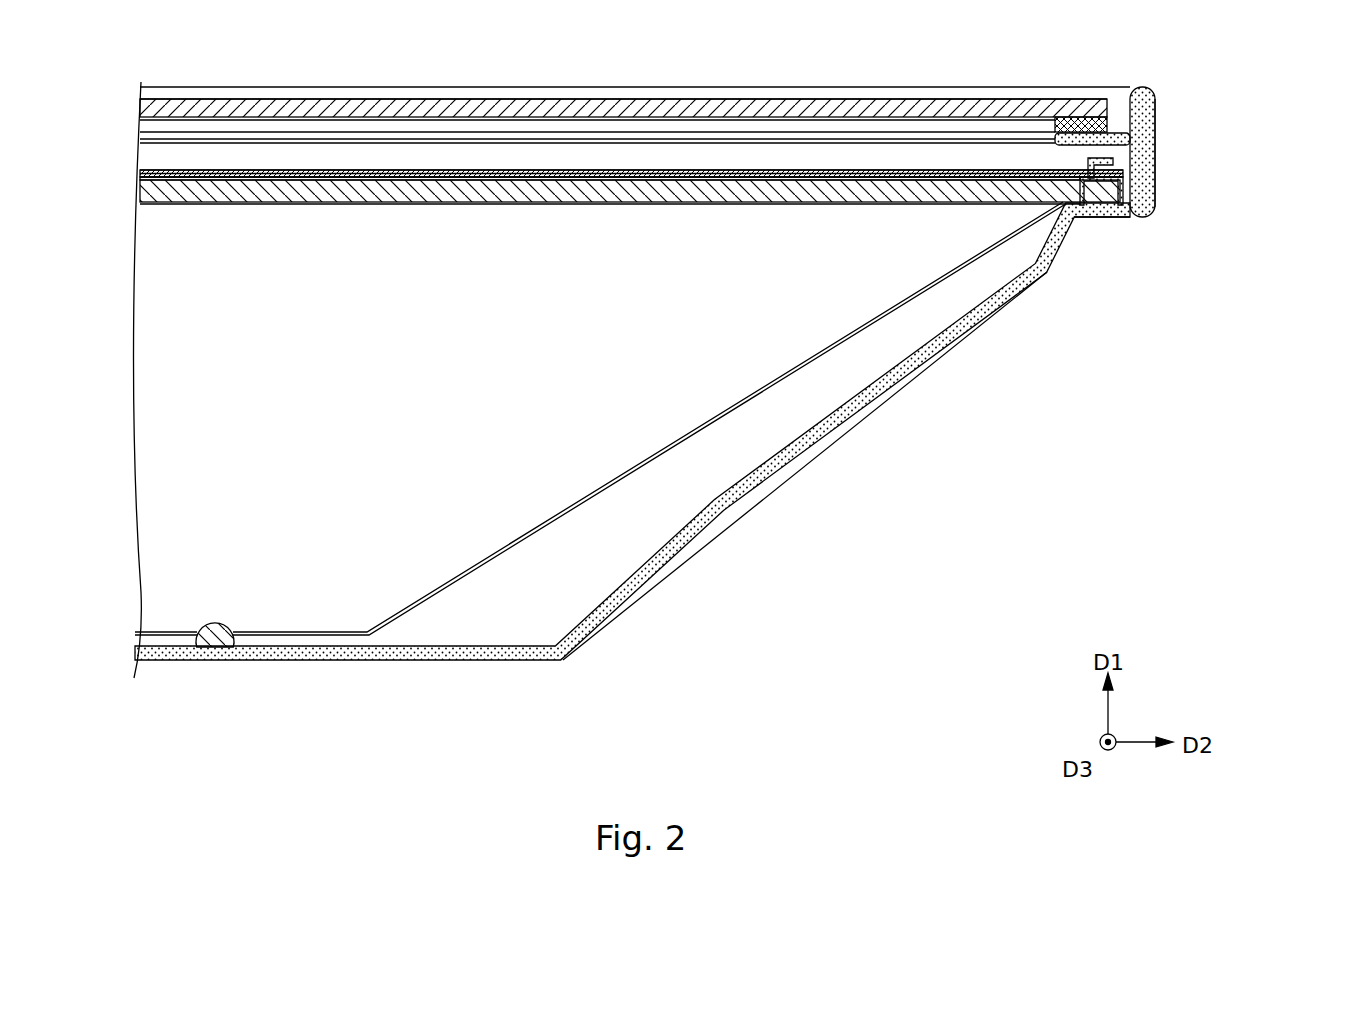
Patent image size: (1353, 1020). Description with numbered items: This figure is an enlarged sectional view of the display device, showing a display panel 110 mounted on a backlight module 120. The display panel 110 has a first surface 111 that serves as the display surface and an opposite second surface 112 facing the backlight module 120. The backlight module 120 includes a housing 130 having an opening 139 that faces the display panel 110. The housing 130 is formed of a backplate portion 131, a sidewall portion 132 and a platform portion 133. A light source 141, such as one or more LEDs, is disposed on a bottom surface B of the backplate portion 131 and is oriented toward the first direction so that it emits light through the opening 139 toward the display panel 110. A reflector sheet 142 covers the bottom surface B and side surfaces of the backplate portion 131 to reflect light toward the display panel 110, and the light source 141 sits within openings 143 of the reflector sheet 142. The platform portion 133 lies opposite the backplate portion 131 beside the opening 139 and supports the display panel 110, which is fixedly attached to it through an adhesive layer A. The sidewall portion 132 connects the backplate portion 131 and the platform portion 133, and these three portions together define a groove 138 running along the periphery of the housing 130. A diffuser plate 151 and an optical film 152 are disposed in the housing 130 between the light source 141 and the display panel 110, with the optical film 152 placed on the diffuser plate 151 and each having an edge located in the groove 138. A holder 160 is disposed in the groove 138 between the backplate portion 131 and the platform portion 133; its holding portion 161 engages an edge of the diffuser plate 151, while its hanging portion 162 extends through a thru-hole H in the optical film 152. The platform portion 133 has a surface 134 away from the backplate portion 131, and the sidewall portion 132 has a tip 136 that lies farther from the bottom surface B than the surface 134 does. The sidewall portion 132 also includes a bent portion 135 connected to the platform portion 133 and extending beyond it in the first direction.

The display panel 110 is at (140, 104).
The first surface 111 is at (350, 98).
The second surface 112 is at (418, 117).
The opening 139 is at (768, 135).
The platform portion 133 is at (1087, 130).
The surface 134 is at (1115, 132).
The bent portion 135 is at (1156, 101).
The tip 136 is at (1150, 87).
The groove 138 is at (1115, 161).
The holder 160 is at (1273, 143).
The holding portion 161 is at (1125, 177).
The hanging portion 162 is at (1125, 171).
The sidewall portion 132 is at (1155, 207).
The housing 130 is at (730, 536).
The backplate portion 131 is at (1000, 312).
The backlight module 120 is at (1268, 452).
The light source 141 is at (216, 646).
The reflector sheet 142 is at (300, 637).
The openings 143 is at (197, 626).
The diffuser plate 151 is at (435, 194).
The optical film 152 is at (350, 181).
The adhesive layer A is at (1066, 117).
The bottom surface B is at (424, 650).
The thru-hole H is at (1077, 192).